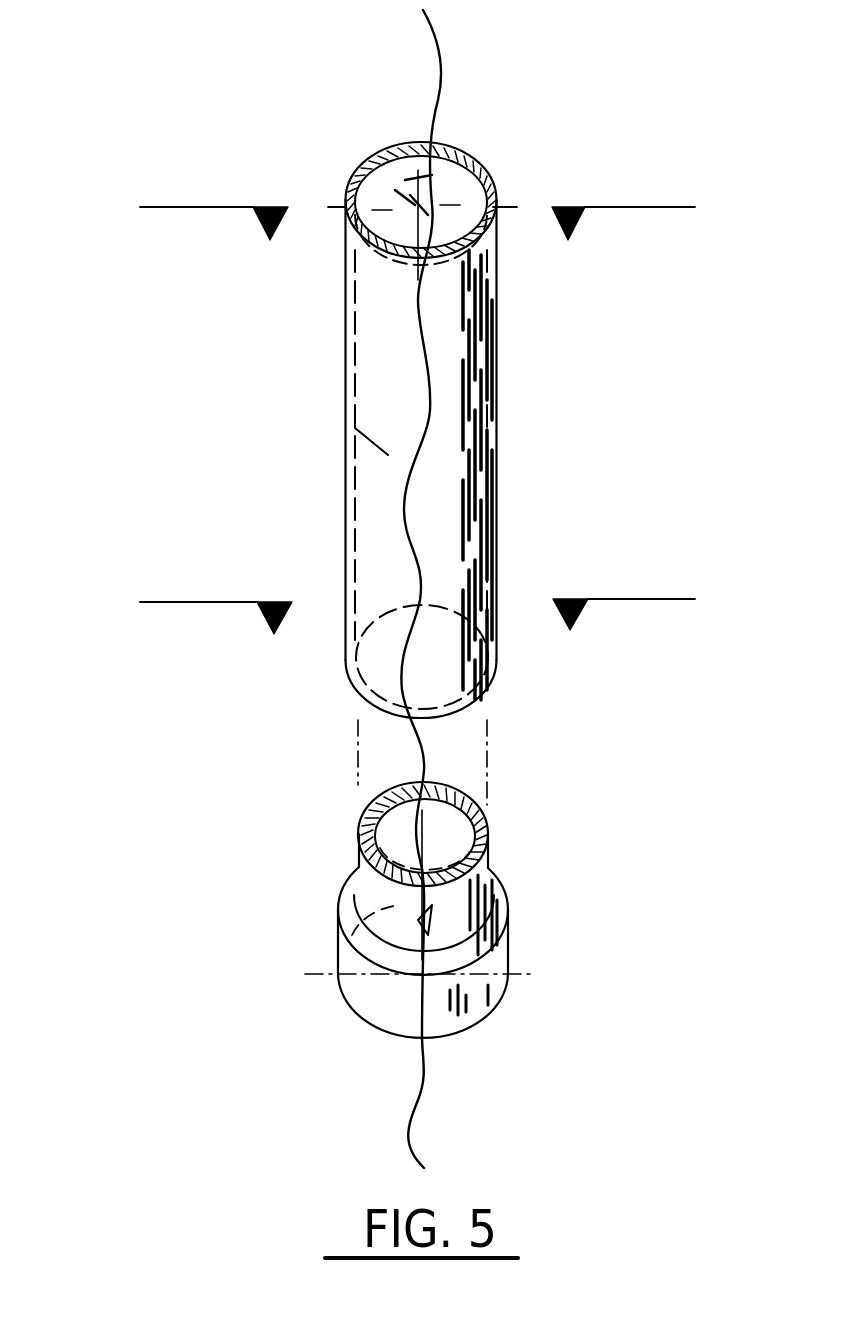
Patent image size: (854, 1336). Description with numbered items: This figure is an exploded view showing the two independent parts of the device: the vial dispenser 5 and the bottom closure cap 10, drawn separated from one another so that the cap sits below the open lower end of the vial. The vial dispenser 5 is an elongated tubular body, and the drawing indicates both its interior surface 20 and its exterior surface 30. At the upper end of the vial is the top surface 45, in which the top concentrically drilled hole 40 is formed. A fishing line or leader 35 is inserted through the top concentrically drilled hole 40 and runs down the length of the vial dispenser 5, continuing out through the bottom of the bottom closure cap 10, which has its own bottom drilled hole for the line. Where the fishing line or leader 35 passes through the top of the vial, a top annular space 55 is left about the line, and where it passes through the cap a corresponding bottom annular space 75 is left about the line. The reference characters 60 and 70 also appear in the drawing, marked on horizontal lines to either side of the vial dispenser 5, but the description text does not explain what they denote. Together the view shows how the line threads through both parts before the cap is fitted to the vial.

The vial dispenser 5 is at (320, 361).
The bottom closure cap 10 is at (328, 910).
The interior surface 20 is at (345, 528).
The exterior surface 30 is at (388, 455).
The fishing line or leader 35 is at (437, 38).
The top concentrically drilled hole 40 is at (380, 197).
The top surface 45 is at (355, 200).
The top annular space 55 is at (425, 210).
The section line 60- 60 is at (418, 212).
The section line 70- 70 is at (419, 604).
The bottom annular space 75 is at (500, 888).